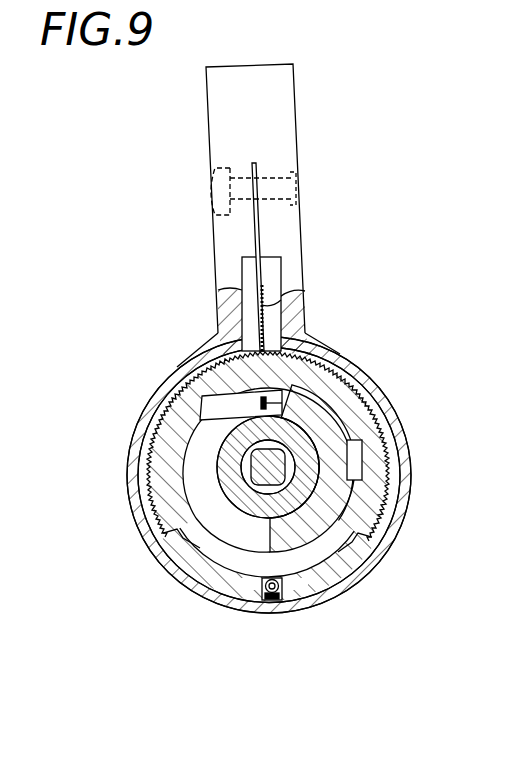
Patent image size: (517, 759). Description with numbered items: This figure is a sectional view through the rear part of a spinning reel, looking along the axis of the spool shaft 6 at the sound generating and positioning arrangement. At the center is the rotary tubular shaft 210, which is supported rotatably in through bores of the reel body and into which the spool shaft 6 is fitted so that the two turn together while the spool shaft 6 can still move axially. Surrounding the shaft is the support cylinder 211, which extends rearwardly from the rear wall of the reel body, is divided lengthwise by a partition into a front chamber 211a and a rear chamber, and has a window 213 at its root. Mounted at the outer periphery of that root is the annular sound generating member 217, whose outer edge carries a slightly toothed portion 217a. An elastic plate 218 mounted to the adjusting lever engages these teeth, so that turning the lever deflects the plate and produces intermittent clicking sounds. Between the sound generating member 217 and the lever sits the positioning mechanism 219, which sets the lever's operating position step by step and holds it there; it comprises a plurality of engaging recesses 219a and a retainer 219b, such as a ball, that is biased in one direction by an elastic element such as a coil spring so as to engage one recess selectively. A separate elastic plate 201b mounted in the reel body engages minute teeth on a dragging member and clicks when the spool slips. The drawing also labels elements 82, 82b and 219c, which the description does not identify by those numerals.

The spool shaft 6 is at (177, 567).
The handle 82 is at (303, 227).
The handle shaft 82b is at (283, 141).
The elastic plate 201b is at (285, 405).
The rotary tubular shaft 210 is at (285, 515).
The support cylinder 211 is at (328, 436).
The front chamber 211a is at (321, 467).
The window 213 is at (245, 550).
The annular sound generating member 217 is at (343, 370).
The toothed portion 217a is at (302, 335).
The elastic plate 218 is at (303, 297).
The positioning mechanism 219 is at (222, 684).
The engaging recesses 219a is at (263, 600).
The retainer 219b is at (270, 600).
The spring seat 219c is at (282, 600).